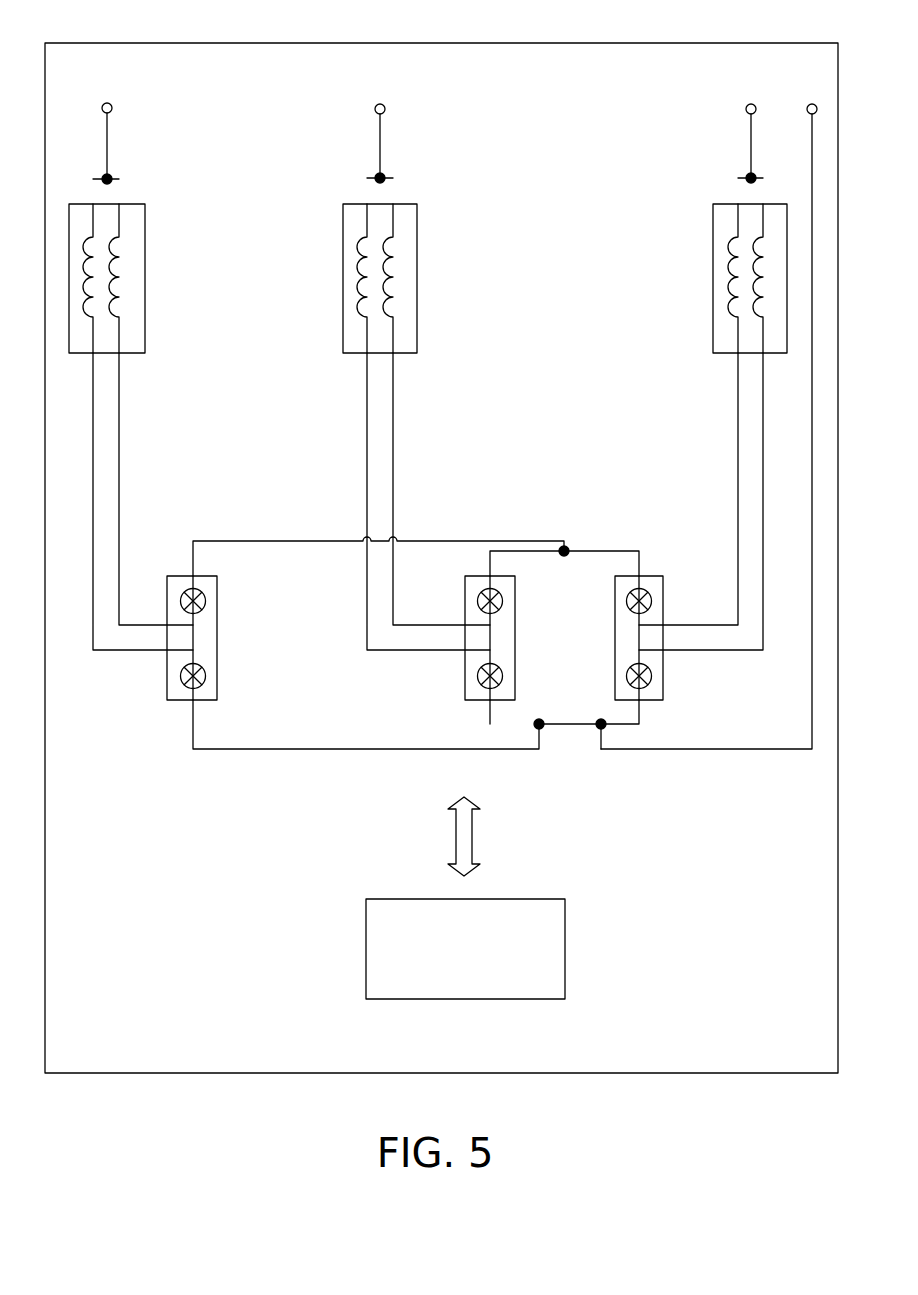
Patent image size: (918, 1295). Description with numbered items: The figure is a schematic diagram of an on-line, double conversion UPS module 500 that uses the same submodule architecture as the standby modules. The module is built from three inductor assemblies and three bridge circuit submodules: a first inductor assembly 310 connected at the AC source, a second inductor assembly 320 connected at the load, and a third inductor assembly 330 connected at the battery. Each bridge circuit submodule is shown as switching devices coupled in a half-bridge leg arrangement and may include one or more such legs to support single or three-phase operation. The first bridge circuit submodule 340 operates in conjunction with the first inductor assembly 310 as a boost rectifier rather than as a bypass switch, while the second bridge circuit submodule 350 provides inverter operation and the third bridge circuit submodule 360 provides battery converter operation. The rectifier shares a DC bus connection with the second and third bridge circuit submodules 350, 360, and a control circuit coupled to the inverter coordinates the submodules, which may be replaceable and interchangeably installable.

The on-line UPS module 500 is at (442, 43).
The first inductor assembly 310 is at (145, 277).
The second inductor assembly 320 is at (417, 277).
The third inductor assembly 330 is at (713, 277).
The first bridge circuit submodule 340 is at (207, 576).
The second bridge circuit submodule 350 is at (475, 576).
The third bridge circuit submodule 360 is at (653, 576).